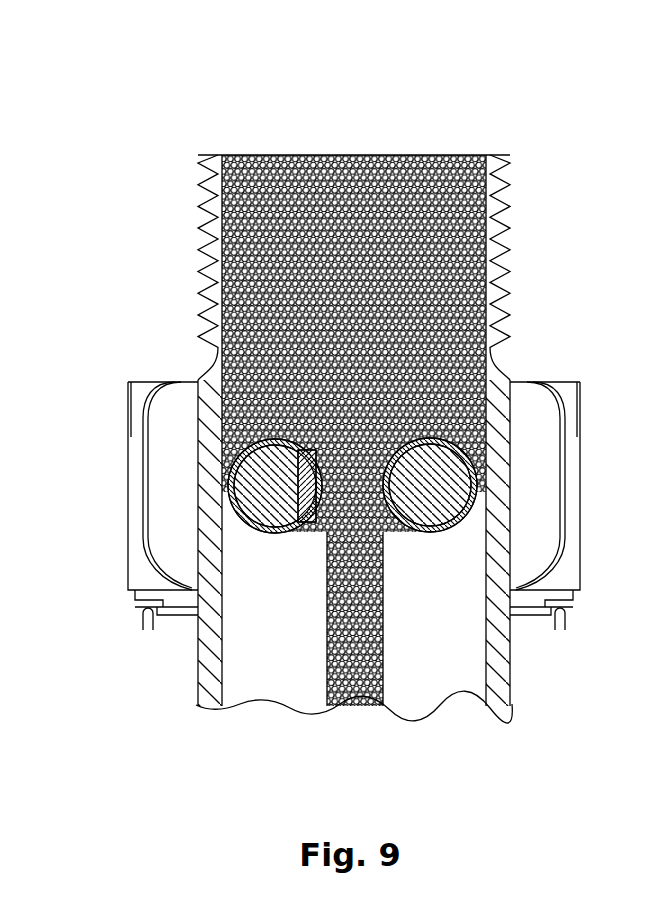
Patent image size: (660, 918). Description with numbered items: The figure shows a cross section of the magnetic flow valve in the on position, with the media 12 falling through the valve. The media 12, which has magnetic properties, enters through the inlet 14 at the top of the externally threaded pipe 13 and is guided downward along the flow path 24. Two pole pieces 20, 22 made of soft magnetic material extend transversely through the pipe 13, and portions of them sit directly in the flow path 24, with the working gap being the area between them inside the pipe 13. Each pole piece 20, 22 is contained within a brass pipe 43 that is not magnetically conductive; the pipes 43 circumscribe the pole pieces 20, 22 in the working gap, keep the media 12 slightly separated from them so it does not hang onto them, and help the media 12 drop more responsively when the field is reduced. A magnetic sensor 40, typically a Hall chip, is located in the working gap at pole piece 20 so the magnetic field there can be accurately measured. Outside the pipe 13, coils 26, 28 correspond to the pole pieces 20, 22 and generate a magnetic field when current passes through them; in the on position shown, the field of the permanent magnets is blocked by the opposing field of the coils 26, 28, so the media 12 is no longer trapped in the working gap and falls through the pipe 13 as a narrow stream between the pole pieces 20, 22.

The media 12 is at (388, 156).
The pipe 13 is at (510, 695).
The inlet 14 is at (278, 155).
The pole piece 20 is at (262, 489).
The pole piece 22 is at (445, 487).
The flow path 24 is at (383, 635).
The coil 26 is at (175, 410).
The coil 28 is at (537, 410).
The magnetic sensor 40 is at (308, 507).
The pipe 43 is at (292, 534).